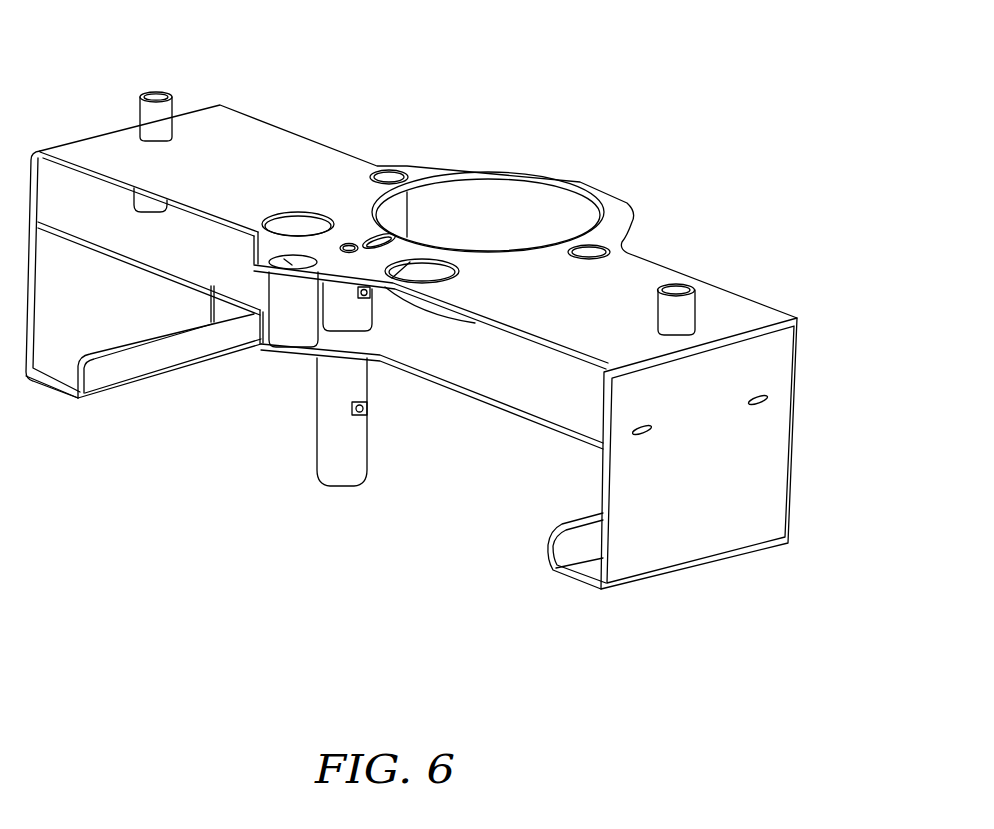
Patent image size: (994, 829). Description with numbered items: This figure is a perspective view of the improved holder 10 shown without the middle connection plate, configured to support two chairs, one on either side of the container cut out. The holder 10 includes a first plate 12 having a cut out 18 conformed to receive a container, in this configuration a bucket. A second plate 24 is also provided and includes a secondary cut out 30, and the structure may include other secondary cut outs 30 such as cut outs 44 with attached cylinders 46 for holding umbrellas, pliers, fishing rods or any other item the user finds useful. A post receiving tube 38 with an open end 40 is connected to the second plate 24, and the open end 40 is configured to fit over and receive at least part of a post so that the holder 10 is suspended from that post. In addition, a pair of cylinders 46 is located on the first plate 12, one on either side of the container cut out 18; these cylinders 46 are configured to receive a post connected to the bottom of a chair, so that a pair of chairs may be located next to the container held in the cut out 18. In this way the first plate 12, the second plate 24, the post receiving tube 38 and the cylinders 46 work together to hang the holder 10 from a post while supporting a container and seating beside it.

The improved holder 10 is at (632, 90).
The first plate 12 is at (760, 311).
The cut out 18 is at (516, 206).
The second plate 24 is at (506, 382).
The secondary cut out 30 is at (293, 212).
The post receiving tube 38 is at (327, 452).
The open end 40 is at (336, 508).
The cut outs 44 is at (262, 256).
The cylinders 46 is at (152, 94).